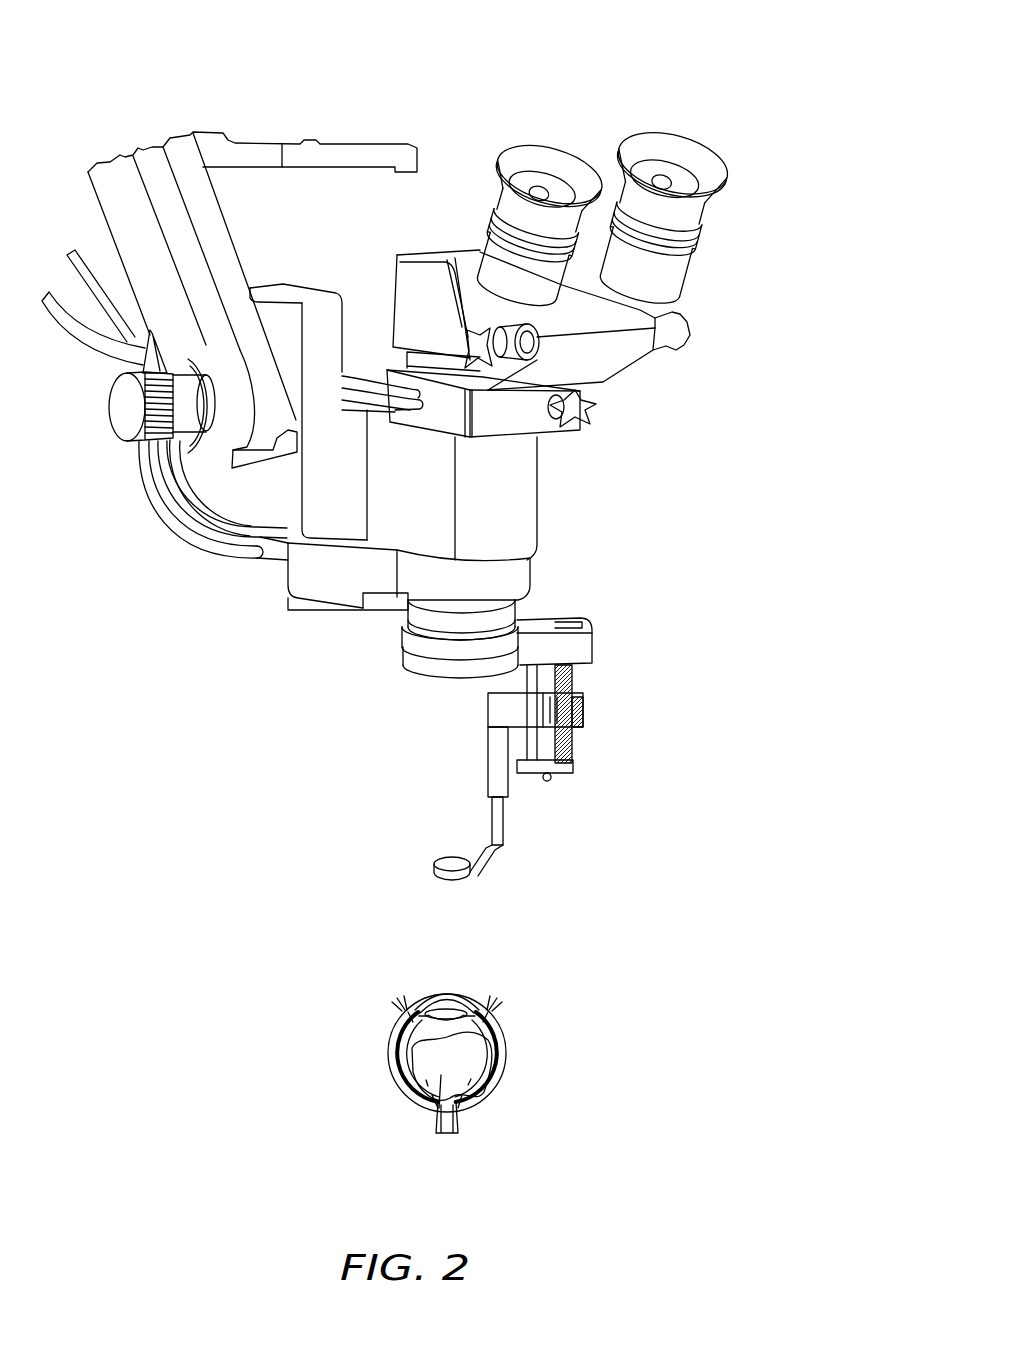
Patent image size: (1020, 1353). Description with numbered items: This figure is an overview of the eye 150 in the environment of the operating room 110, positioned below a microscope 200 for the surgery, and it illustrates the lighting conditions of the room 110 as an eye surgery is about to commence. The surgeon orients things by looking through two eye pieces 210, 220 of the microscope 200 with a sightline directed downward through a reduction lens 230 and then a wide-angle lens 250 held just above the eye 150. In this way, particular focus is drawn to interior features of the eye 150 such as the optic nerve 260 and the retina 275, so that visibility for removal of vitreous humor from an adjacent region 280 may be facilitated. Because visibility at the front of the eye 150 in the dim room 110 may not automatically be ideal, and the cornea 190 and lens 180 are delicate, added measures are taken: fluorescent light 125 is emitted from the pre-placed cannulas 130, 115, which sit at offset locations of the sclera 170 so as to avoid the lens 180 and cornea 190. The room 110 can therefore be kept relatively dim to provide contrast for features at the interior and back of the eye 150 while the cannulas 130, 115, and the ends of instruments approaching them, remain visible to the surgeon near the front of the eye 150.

The operating room 110 is at (307, 890).
The cannula 115 is at (497, 1023).
The fluorescent light 125 is at (378, 998).
The cannula 130 is at (397, 1020).
The eye 150 is at (376, 1050).
The sclera 170 is at (505, 1052).
The lens 180 is at (467, 1002).
The cornea 190 is at (443, 993).
The microscope 200 is at (366, 371).
The eye piece 210 is at (545, 153).
The eye piece 220 is at (650, 143).
The reduction lens 230 is at (427, 673).
The wide-angle lens 250 is at (470, 875).
The optic nerve 260 is at (460, 1123).
The retina 275 is at (397, 1083).
The region 280 is at (480, 1062).